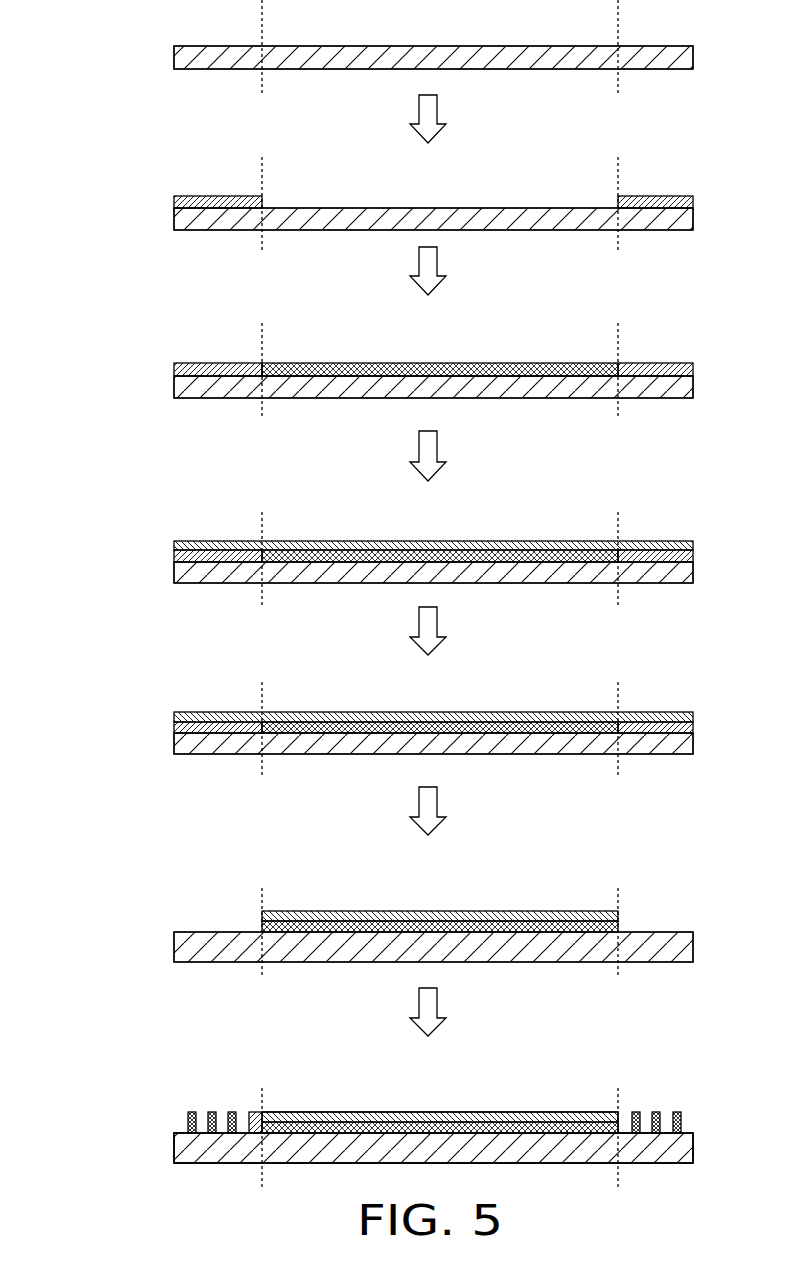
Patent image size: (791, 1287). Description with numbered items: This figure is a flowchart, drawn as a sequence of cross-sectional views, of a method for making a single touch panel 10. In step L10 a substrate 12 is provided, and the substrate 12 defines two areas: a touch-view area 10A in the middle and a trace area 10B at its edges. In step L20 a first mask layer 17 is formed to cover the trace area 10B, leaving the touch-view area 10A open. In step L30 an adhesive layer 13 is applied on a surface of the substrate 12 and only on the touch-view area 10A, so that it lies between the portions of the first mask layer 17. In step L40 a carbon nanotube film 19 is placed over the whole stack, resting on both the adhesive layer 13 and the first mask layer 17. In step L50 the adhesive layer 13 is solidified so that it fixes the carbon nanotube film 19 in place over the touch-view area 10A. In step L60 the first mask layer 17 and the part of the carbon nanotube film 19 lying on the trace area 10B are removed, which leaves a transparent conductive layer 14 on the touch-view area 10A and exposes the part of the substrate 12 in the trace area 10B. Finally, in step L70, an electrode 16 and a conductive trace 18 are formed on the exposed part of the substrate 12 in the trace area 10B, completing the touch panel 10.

The touch panel 10 is at (312, 1075).
The touch-view area 10A is at (367, 593).
The trace area 10B is at (658, 593).
The substrate 12 is at (688, 66).
The adhesive layer 13 is at (517, 362).
The transparent conductive layer 14 is at (490, 911).
The electrode 16 is at (255, 1118).
The first mask layer 17 is at (693, 202).
The conductive trace 18 is at (186, 1112).
The carbon nanotube film 19 is at (562, 541).
The step of providing a substrate L10 is at (140, 57).
The step of forming a first mask layer L20 is at (140, 220).
The step of applying an adhesive layer L30 is at (140, 387).
The step of placing a carbon nanotube film L40 is at (140, 570).
The step of solidifying the adhesive layer L50 is at (140, 742).
The step of removing the first mask layer L60 is at (140, 947).
The step of forming an electrode and a conductive trace L70 is at (140, 1149).